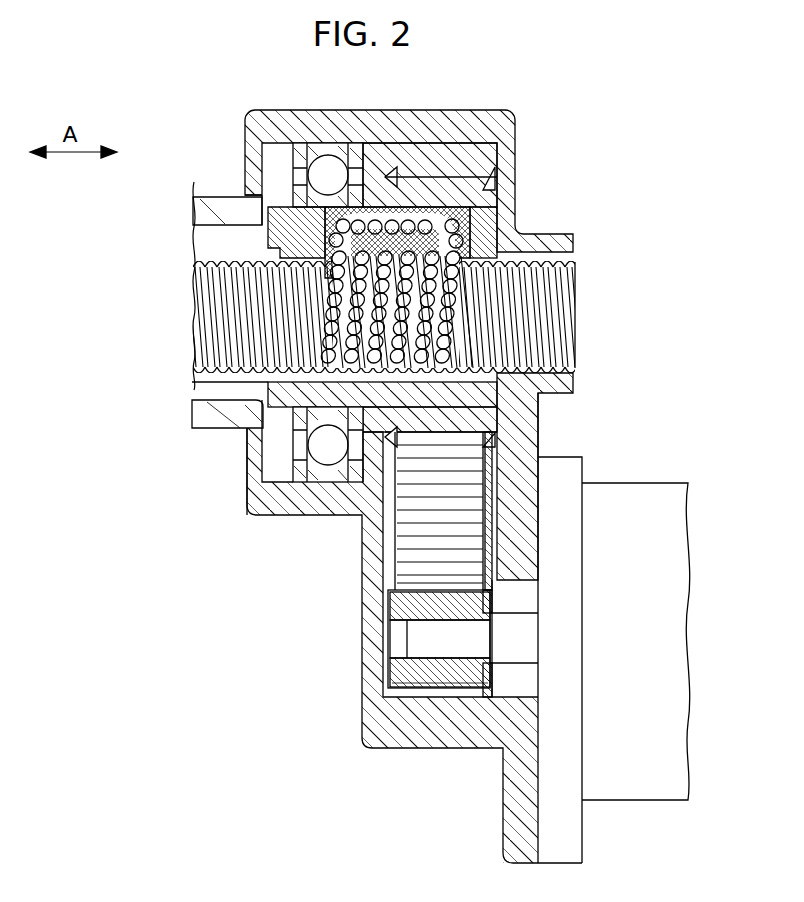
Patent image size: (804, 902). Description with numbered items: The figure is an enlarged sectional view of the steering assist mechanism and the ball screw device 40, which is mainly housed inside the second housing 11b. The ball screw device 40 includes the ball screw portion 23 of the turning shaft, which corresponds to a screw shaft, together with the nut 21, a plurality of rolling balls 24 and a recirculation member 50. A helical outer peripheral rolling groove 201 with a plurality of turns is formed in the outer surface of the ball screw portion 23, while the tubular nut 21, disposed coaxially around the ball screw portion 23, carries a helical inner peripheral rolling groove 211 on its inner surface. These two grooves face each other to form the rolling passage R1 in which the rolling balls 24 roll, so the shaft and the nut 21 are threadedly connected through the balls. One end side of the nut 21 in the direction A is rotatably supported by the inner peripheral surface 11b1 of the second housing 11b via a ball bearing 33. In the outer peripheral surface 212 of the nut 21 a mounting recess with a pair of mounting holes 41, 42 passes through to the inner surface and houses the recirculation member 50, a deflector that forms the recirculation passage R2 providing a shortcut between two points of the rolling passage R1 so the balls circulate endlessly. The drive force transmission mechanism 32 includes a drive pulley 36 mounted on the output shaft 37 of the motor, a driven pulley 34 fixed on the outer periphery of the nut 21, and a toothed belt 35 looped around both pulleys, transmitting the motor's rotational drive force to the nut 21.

The second housing 11b is at (412, 130).
The inner peripheral surface 11b1 is at (262, 152).
The ball bearing 33 is at (312, 150).
The driven pulley 34 is at (433, 205).
The recirculation member 50 is at (436, 207).
The recirculation passage R2 is at (430, 205).
The mounting hole 42 is at (477, 234).
The mounting hole 41 is at (262, 235).
The ball screw device 40 is at (220, 221).
The ball screw portion 23 is at (221, 252).
The outer peripheral rolling groove 201 is at (530, 262).
The inner peripheral rolling groove 211 is at (600, 347).
The rolling passage R1 is at (192, 383).
The rolling balls 24 is at (433, 313).
The outer peripheral surface 212 is at (247, 435).
The nut 21 is at (500, 398).
The toothed belt 35 is at (427, 548).
The drive force transmission mechanism 32 is at (387, 647).
The drive pulley 36 is at (450, 672).
The output shaft 37 is at (517, 643).